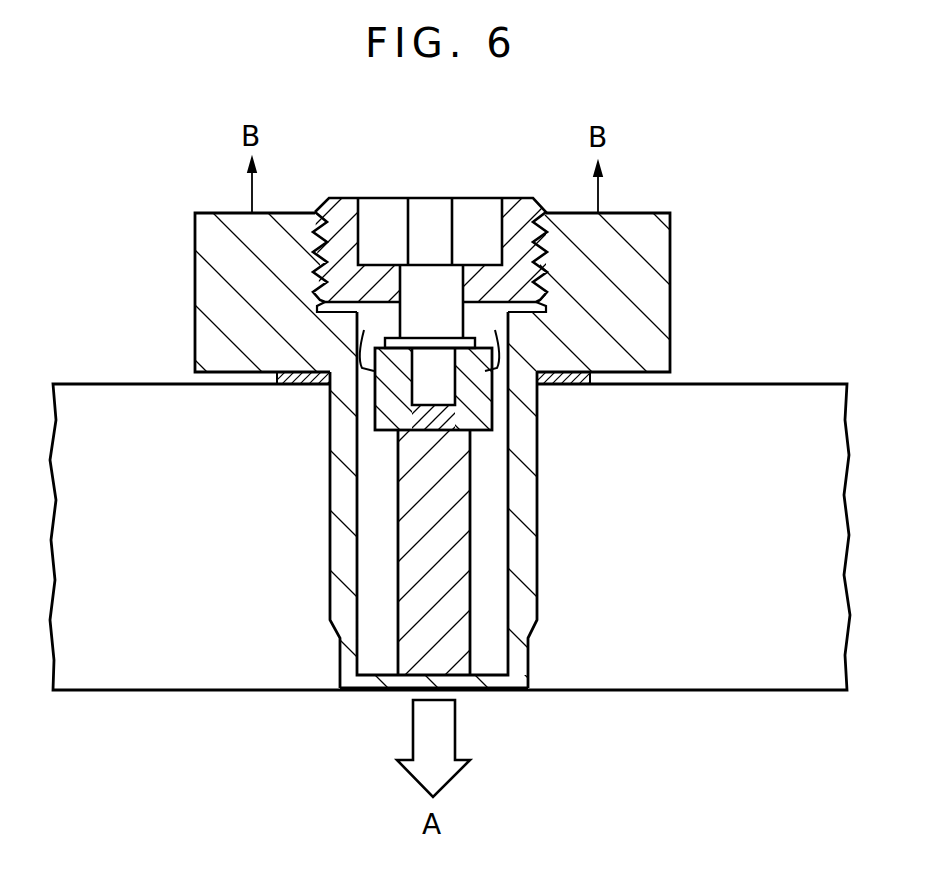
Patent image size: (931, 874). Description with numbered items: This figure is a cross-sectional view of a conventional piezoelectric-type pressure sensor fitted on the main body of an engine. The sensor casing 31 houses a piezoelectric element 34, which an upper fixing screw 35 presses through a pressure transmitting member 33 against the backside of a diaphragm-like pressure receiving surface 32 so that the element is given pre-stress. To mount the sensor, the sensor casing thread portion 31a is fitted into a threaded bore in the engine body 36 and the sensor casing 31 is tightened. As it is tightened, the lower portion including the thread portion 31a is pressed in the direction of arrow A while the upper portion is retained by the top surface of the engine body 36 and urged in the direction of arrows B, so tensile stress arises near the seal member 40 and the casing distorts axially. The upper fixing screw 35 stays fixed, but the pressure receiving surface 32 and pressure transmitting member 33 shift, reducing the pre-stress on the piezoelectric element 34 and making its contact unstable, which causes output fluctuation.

The sensor casing 31 is at (670, 262).
The sensor casing thread portion 31a is at (334, 556).
The pressure receiving surface 32 is at (370, 683).
The pressure transmitting member 33 is at (470, 542).
The piezoelectric element 34 is at (486, 402).
The upper fixing screw 35 is at (513, 198).
The engine body 36 is at (737, 683).
The seal member 40 is at (290, 386).